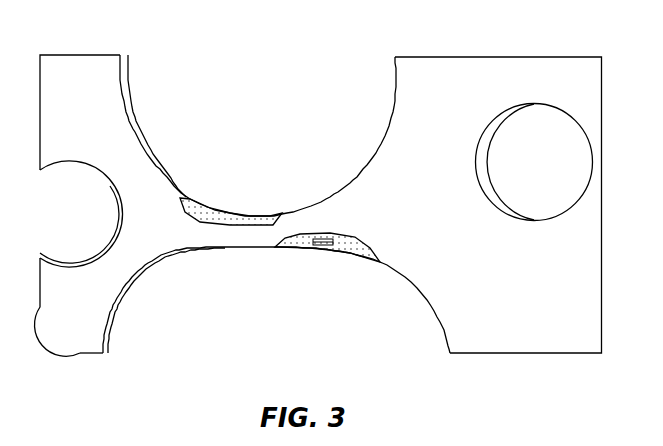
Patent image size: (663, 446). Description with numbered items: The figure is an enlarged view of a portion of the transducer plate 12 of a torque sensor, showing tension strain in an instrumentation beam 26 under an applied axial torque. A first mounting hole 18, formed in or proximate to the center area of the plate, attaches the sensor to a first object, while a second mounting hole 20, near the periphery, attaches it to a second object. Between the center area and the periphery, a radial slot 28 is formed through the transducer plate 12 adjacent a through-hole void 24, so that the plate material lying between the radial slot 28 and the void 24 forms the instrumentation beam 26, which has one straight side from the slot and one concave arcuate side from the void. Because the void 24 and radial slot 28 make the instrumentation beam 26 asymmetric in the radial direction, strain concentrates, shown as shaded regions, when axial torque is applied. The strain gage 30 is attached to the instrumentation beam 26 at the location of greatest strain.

The transducer plate 12 is at (465, 82).
The first mounting holes 18 is at (59, 224).
The second mounting holes 20 is at (526, 170).
The void 24 is at (262, 116).
The instrumentation beam 26 is at (227, 238).
The radial slot 28 is at (264, 318).
The strain gage 30 is at (322, 248).